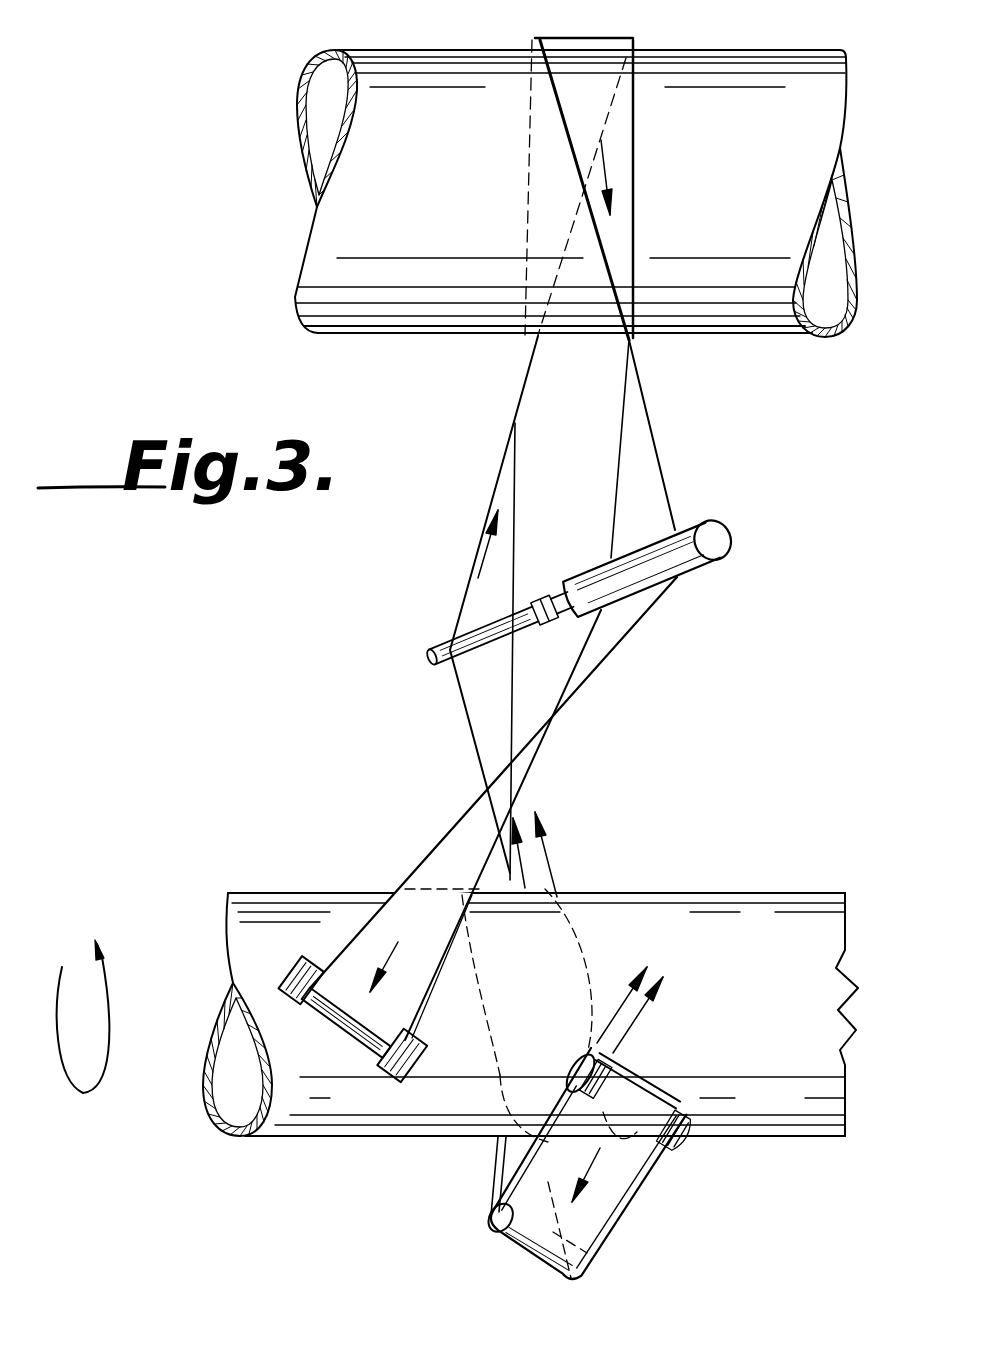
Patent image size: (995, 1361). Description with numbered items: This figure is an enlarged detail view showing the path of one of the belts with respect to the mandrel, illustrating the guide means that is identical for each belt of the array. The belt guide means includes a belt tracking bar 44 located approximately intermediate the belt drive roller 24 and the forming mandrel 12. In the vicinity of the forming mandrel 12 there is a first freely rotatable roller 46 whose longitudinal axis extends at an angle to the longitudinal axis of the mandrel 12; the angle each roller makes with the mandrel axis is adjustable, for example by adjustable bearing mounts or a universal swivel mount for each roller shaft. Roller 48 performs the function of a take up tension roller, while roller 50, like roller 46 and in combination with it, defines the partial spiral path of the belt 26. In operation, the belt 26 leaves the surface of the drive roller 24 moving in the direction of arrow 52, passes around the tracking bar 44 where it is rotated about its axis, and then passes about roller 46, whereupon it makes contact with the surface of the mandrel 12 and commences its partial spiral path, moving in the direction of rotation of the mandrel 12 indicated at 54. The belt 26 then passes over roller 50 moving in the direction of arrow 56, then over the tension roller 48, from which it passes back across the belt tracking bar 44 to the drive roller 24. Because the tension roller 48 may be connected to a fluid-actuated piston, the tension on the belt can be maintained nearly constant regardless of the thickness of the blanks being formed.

The forming mandrel 12 is at (763, 910).
The belt drive roller 24 is at (775, 68).
The belt 26 is at (460, 843).
The belt tracking bar 44 is at (690, 522).
The first freely rotatable roller 46 is at (315, 962).
The take up tension roller 48 is at (568, 1276).
The roller 50 is at (690, 1125).
The arrow 52 is at (602, 163).
The direction of rotation of the mandrel 54 is at (102, 1082).
The arrow 56 is at (595, 1165).